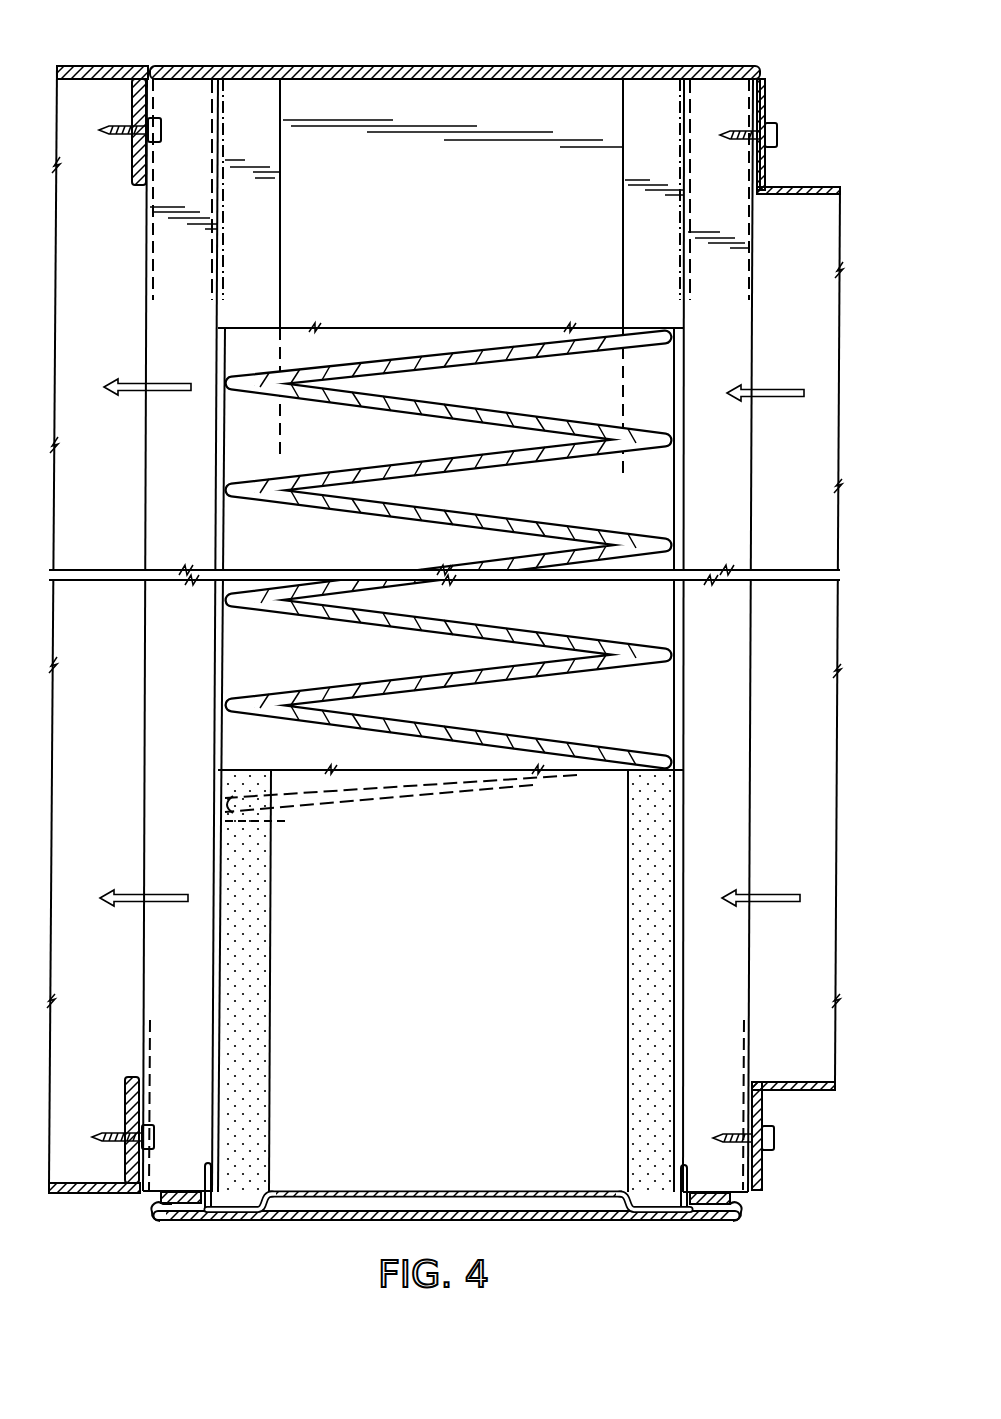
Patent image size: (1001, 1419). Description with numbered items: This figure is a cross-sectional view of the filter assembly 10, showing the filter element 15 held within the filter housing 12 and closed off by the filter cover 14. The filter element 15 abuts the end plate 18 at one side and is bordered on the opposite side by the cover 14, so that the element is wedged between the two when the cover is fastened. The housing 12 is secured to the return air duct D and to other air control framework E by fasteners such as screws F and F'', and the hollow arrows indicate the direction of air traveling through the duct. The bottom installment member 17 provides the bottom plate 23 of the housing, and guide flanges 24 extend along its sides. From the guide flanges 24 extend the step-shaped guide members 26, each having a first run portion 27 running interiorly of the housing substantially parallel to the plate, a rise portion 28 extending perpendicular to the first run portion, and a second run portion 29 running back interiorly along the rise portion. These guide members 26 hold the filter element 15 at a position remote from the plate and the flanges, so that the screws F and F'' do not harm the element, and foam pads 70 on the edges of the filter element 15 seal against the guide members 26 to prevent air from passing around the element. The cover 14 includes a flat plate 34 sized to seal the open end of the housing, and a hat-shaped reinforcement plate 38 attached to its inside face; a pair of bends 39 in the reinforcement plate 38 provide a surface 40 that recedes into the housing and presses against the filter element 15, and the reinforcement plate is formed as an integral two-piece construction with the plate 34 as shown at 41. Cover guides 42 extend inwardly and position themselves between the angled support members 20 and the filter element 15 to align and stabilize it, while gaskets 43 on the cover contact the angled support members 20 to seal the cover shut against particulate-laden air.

The filter assembly 10 is at (813, 61).
The filter housing 12 is at (710, 68).
The filter cover 14 is at (291, 1226).
The filter element 15 is at (674, 459).
The bottom installment member 17 is at (358, 108).
The end plate 18 is at (592, 72).
The angled support members 20 is at (130, 1100).
The bottom plate 23 is at (466, 252).
The guide flanges 24 is at (146, 238).
The guide members 26 is at (232, 286).
The first run portion 27 is at (180, 266).
The rise portion 28 is at (219, 222).
The second run portion 29 is at (262, 242).
The flat plate 34 is at (345, 1223).
The reinforcement plate 38 is at (514, 1184).
The bends 39 is at (280, 1197).
The surface 40 is at (432, 1189).
The integral two-piece construction 41 is at (152, 1222).
The cover guides 42 is at (213, 1178).
The gaskets 43 is at (160, 1198).
The foam pads 70 is at (252, 893).
The air control framework E is at (104, 68).
The return air duct D is at (806, 189).
The screws F is at (767, 644).
The fastening screw F'' is at (146, 633).